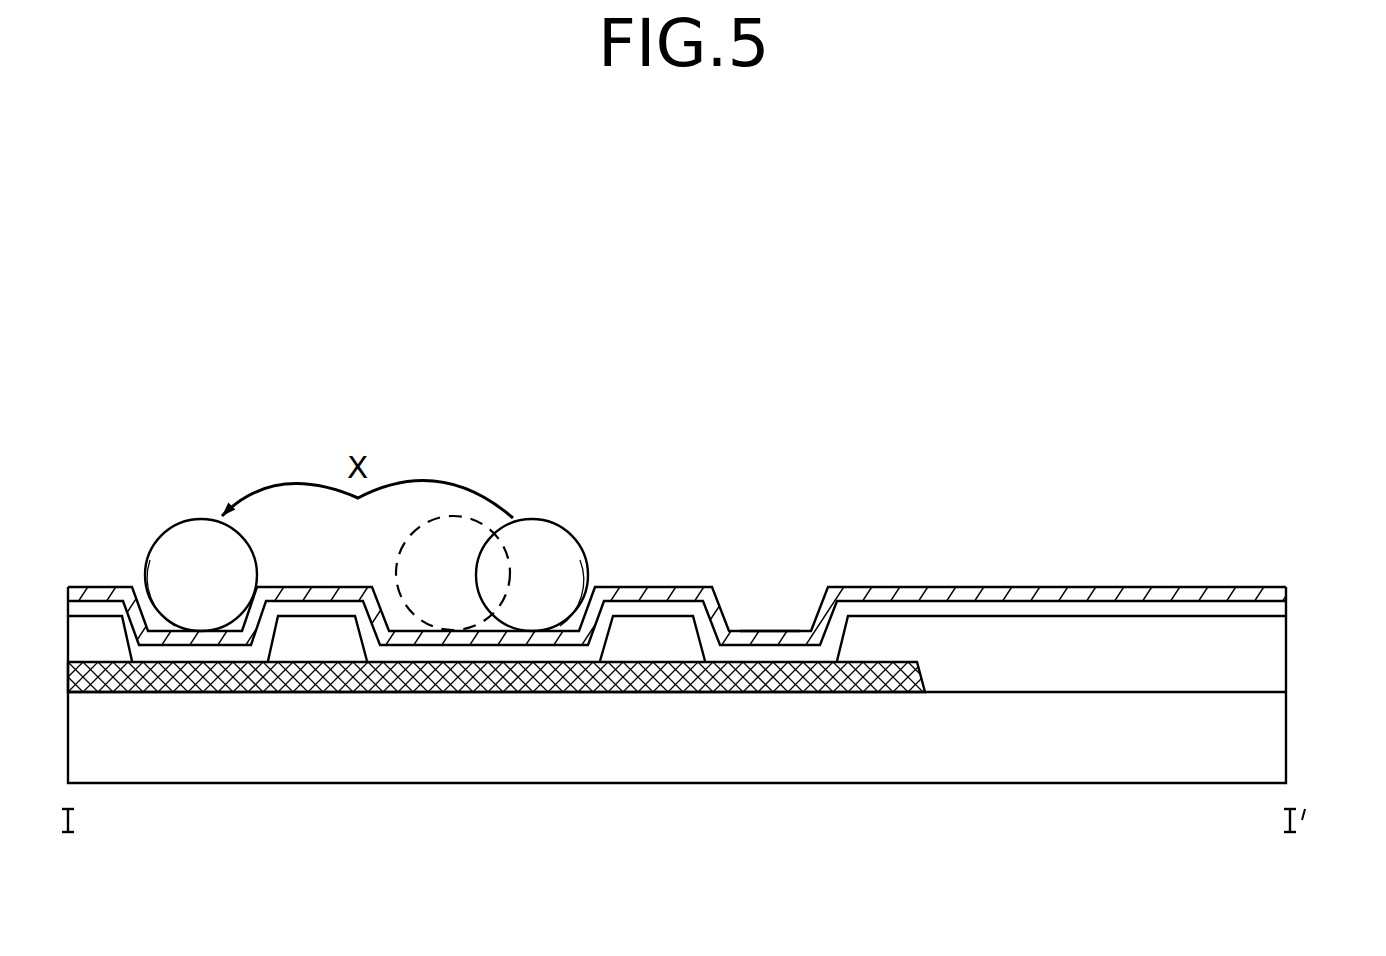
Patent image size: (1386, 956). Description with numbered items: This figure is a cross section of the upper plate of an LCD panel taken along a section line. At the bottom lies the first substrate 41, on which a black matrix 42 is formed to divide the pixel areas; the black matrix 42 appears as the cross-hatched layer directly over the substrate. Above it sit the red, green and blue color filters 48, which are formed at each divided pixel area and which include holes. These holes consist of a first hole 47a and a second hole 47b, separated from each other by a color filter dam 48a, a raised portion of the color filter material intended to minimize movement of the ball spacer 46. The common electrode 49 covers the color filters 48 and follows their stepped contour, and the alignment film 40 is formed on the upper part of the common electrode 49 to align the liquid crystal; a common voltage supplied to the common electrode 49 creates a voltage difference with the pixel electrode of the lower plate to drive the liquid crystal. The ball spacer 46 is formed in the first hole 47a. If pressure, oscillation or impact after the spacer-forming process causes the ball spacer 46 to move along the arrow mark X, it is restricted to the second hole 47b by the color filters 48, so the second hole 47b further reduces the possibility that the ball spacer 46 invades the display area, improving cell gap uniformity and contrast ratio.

The alignment film 40 is at (1287, 590).
The first substrate 41 is at (1283, 735).
The black matrix 42 is at (520, 693).
The ball spacer 46 is at (570, 524).
The first hole 47a is at (563, 620).
The second hole 47b is at (177, 621).
The color filters 48 is at (112, 647).
The color filter dam 48a is at (315, 647).
The common electrode 49 is at (1284, 610).